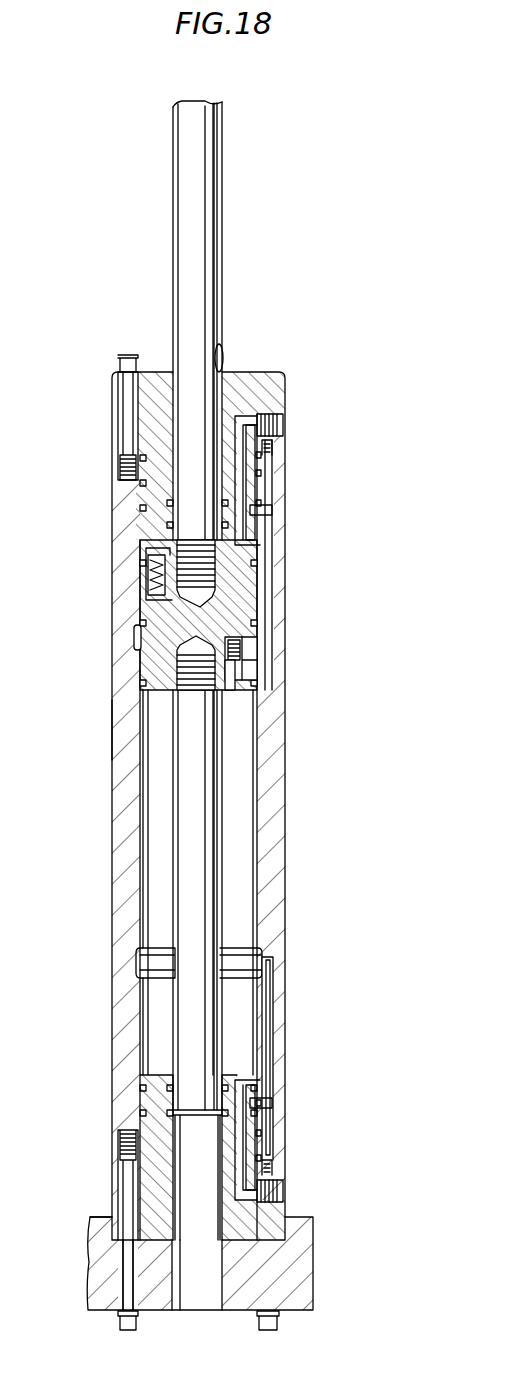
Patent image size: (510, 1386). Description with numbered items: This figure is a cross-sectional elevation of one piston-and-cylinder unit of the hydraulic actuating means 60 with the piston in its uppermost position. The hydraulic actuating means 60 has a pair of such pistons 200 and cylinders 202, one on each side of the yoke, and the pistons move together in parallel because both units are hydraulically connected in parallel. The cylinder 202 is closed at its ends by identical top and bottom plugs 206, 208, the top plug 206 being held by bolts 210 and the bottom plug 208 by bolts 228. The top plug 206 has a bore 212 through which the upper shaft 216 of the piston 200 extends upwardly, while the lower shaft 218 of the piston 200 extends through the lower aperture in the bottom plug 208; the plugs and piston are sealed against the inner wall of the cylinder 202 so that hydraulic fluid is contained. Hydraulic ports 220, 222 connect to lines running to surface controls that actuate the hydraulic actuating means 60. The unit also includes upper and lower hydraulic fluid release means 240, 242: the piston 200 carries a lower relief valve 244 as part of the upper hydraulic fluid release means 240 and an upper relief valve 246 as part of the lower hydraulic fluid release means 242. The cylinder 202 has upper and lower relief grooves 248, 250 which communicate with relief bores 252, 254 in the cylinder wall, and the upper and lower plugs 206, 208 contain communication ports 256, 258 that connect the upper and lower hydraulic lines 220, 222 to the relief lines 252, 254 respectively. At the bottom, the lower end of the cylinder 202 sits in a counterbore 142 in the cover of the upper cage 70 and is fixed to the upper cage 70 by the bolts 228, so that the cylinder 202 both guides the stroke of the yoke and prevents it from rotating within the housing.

The hydraulic actuating means 60 is at (110, 702).
The upper cage 70 is at (315, 1287).
The counterbore 142 is at (113, 1228).
The piston 200 is at (242, 585).
The cylinder 202 is at (277, 798).
The top plug 206 is at (115, 405).
The bottom plug 208 is at (147, 1173).
The bolt 210 is at (128, 437).
The bore 212 is at (222, 357).
The upper shaft 216 is at (224, 213).
The lower shaft 218 is at (230, 900).
The hydraulic port 220 is at (277, 455).
The hydraulic port 222 is at (277, 1170).
The bolt 228 is at (125, 1277).
The upper hydraulic fluid release means 240 is at (262, 662).
The lower hydraulic fluid release means 242 is at (265, 950).
The lower relief valve 244 is at (232, 678).
The upper relief valve 246 is at (138, 545).
The upper relief groove 248 is at (133, 645).
The lower relief groove 250 is at (135, 962).
The relief bore 252 is at (270, 552).
The relief bore 254 is at (275, 1000).
The communication port 256 is at (270, 518).
The communication port 258 is at (258, 1100).